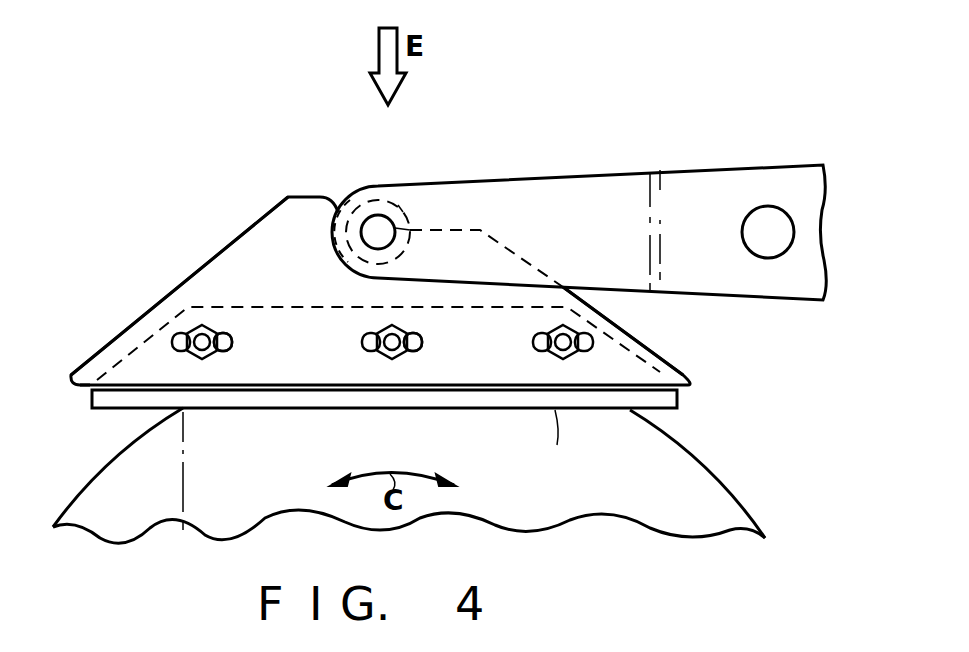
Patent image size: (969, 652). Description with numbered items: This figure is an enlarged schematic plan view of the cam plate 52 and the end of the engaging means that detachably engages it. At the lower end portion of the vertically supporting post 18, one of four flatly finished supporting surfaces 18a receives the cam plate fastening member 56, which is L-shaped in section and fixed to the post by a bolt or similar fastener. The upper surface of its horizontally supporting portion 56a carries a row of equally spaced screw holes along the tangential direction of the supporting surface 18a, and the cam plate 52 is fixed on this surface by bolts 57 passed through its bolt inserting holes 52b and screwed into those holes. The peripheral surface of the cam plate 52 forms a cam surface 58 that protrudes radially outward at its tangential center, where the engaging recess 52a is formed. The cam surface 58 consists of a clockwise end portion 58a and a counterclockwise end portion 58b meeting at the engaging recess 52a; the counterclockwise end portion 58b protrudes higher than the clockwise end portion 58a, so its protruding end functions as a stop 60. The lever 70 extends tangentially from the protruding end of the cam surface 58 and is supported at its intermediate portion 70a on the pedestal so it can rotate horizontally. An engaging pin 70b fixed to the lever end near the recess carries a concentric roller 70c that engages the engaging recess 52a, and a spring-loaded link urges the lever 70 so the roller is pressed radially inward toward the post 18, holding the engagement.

The vertically supporting post 18 is at (730, 492).
The supporting surface 18a is at (560, 446).
The cam plate 52 is at (158, 292).
The engaging recess 52a is at (346, 250).
The bolt inserting holes 52b is at (234, 343).
The cam plate fastening member 56 is at (680, 398).
The horizontally supporting portion 56a is at (665, 360).
The bolts 57 is at (205, 358).
The cam surface 58 is at (125, 327).
The clockwise end portion 58a is at (632, 330).
The counterclockwise end portion 58b is at (198, 268).
The stop 60 is at (350, 198).
The lever 70 is at (717, 168).
The intermediate portion 70a is at (788, 218).
The engaging pin 70b is at (395, 228).
The roller 70c is at (400, 202).